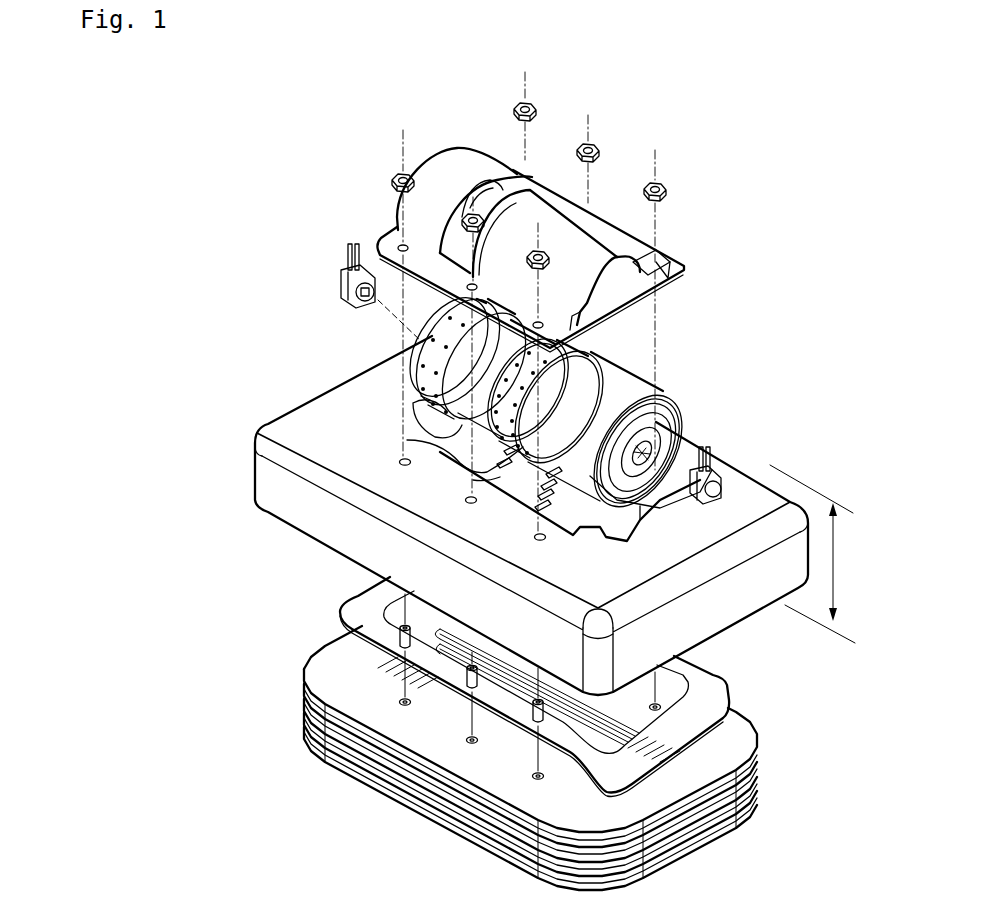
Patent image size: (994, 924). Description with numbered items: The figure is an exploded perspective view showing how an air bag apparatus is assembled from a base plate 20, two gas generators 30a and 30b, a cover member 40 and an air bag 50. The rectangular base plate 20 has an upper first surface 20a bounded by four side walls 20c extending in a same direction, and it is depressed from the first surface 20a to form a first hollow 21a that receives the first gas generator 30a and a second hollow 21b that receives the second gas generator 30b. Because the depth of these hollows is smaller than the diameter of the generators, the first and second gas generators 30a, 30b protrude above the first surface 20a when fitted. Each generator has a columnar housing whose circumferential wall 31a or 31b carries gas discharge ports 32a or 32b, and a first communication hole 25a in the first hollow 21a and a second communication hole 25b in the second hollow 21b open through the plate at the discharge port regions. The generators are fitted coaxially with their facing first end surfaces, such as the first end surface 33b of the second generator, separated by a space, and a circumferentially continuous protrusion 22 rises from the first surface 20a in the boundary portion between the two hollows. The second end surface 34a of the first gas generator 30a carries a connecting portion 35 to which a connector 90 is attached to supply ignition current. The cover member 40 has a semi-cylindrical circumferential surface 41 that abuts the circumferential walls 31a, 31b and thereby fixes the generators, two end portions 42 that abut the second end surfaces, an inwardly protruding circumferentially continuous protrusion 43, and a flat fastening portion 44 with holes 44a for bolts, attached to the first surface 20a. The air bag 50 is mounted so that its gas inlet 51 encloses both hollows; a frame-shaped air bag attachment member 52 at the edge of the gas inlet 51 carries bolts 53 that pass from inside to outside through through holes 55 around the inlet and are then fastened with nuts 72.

The base plate 20 is at (512, 475).
The first surface 20a is at (560, 590).
The side walls 20c is at (262, 488).
The first hollow 21a is at (697, 638).
The second hollow 21b is at (407, 440).
The protrusion 22 is at (312, 535).
The first communication hole 25a is at (490, 478).
The second communication hole 25b is at (468, 463).
The first gas generator 30a is at (615, 419).
The second gas generator 30b is at (419, 366).
The circumferential wall 31a is at (610, 368).
The circumferential wall 31b is at (440, 358).
The gas discharge ports 32a is at (545, 358).
The gas discharge ports 32b is at (473, 342).
The first end surface 33b is at (414, 398).
The second end surface 34a is at (677, 417).
The connecting portion 35 is at (655, 465).
The cover member 40 is at (508, 212).
The circumferential surface 41 is at (486, 261).
The end portions 42 is at (677, 280).
The protrusion 43 is at (488, 195).
The fastening portion 44 is at (681, 253).
The holes 44a is at (400, 246).
The air bag 50 is at (564, 751).
The gas inlet 51 is at (615, 783).
The air bag attachment member 52 is at (717, 687).
The bolts 53 is at (530, 712).
The through holes 55 is at (398, 704).
The nuts 72 is at (660, 187).
The connector 90 is at (347, 272).